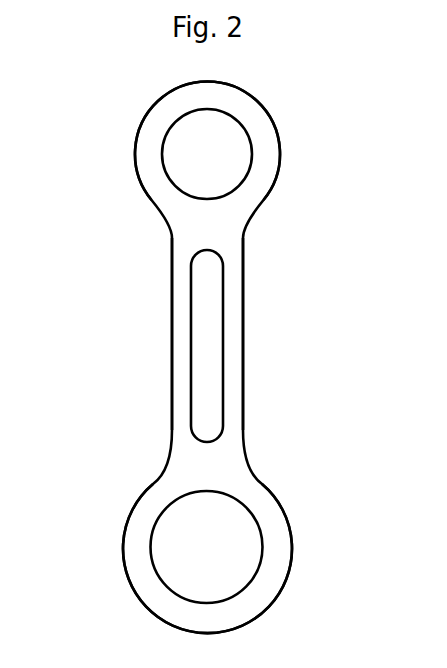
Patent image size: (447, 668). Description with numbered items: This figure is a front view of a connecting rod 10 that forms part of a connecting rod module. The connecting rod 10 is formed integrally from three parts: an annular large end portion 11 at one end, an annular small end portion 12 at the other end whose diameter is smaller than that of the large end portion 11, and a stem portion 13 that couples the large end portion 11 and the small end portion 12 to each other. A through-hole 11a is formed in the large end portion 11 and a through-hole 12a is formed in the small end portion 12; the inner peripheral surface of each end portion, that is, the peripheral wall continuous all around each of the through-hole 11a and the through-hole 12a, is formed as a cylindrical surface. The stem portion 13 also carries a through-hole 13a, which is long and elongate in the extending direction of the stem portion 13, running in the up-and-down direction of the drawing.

The connecting rod 10 is at (122, 232).
The large end portion 11 is at (130, 534).
The through-hole 11a is at (238, 551).
The small end portion 12 is at (148, 135).
The through-hole 12a is at (228, 153).
The stem portion 13 is at (180, 334).
The through-hole 13a is at (212, 348).